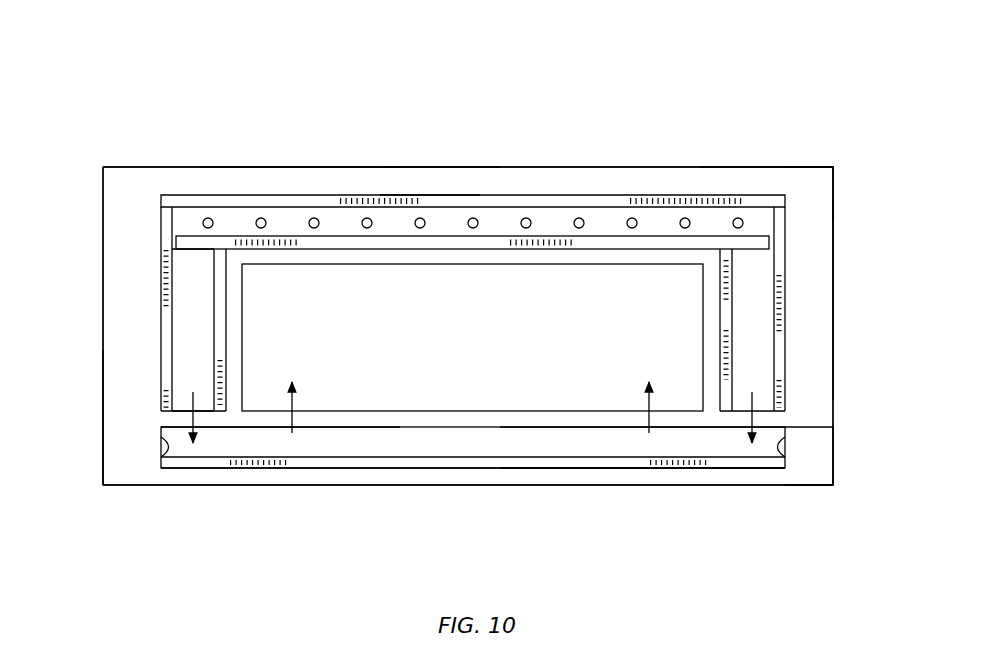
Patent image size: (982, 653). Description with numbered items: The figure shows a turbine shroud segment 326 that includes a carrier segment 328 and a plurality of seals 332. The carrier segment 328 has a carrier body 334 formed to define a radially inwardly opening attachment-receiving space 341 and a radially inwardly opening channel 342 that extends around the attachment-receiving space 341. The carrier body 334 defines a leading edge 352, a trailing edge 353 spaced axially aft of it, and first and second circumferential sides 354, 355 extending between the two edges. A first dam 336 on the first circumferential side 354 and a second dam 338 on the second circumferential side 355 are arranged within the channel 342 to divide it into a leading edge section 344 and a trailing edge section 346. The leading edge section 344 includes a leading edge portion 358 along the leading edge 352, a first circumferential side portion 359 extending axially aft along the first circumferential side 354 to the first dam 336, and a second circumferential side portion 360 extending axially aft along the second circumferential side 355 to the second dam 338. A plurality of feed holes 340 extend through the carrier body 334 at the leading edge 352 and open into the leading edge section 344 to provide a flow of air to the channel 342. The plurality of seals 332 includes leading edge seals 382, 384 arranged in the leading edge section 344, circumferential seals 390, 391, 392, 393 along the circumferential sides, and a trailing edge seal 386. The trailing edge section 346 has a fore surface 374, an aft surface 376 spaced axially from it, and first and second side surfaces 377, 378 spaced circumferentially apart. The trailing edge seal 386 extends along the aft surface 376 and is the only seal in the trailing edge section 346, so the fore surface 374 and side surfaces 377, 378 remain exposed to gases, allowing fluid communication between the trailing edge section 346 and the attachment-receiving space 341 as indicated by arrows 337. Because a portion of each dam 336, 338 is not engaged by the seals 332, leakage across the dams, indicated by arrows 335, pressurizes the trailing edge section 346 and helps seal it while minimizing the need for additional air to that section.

The turbine shroud segment 326 is at (127, 125).
The carrier segment 328 is at (200, 145).
The plurality of seals 332 is at (137, 245).
The carrier body 334 is at (300, 167).
The leading edge 352 is at (440, 167).
The leading edge section 344 is at (760, 187).
The radially inwardly opening channel 342 is at (753, 305).
The second circumferential side portion 360 is at (811, 193).
The second circumferential side 355 is at (838, 254).
The leading edge seal 382 is at (580, 195).
The leading edge portion 358 is at (497, 222).
The circumferential seal 390 is at (160, 338).
The circumferential seal 392 is at (787, 312).
The second dam 338 is at (785, 417).
The feed holes 340 is at (632, 210).
The leading edge seal 384 is at (550, 230).
The circumferential seal 391 is at (212, 366).
The circumferential seal 393 is at (727, 362).
The first circumferential side portion 359 is at (197, 310).
The attachment-receiving space 341 is at (472, 337).
The second side surface 378 is at (773, 447).
The first side surface 377 is at (172, 457).
The trailing edge seal 386 is at (310, 468).
The aft surface 376 is at (630, 468).
The fore surface 374 is at (705, 430).
The trailing edge 353 is at (378, 487).
The trailing edge section 346 is at (805, 445).
The first circumferential side 354 is at (100, 420).
The first dam 336 is at (172, 424).
The arrows indicating leakage across the dams 335 is at (193, 398).
The arrows indicating fluid communication 337 is at (292, 413).